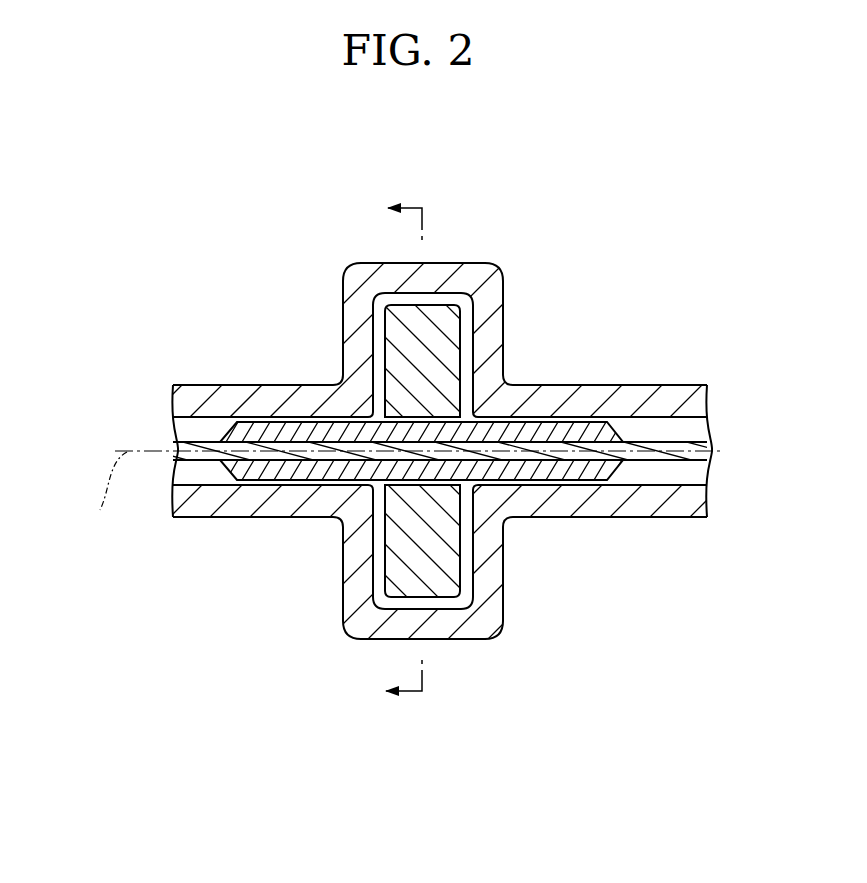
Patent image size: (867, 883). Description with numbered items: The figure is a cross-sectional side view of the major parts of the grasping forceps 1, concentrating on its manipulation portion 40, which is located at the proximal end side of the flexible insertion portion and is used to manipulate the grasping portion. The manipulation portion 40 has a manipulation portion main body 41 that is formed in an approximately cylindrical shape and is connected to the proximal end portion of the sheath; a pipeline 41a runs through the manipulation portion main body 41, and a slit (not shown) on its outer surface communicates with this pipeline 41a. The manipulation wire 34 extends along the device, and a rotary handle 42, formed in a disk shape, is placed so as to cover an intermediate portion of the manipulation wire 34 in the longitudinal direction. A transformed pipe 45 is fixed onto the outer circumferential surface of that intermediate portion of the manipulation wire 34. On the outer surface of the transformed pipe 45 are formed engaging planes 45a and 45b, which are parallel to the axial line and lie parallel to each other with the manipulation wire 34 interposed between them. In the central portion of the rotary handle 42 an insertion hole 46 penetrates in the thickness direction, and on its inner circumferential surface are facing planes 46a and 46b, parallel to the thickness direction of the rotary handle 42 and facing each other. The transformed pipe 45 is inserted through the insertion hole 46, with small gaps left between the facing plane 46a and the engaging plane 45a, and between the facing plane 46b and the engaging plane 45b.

The grasping forceps 1 is at (158, 273).
The manipulation wire 34 is at (177, 447).
The manipulation portion 40 is at (641, 253).
The manipulation portion main body 41 is at (636, 386).
The pipeline 41a is at (671, 418).
The rotary handle 42 is at (447, 325).
The transformed pipe 45 is at (422, 443).
The engaging plane 45a is at (310, 422).
The engaging plane 45b is at (297, 481).
The insertion hole 46 is at (489, 425).
The facing plane 46a is at (448, 423).
The facing plane 46b is at (450, 480).